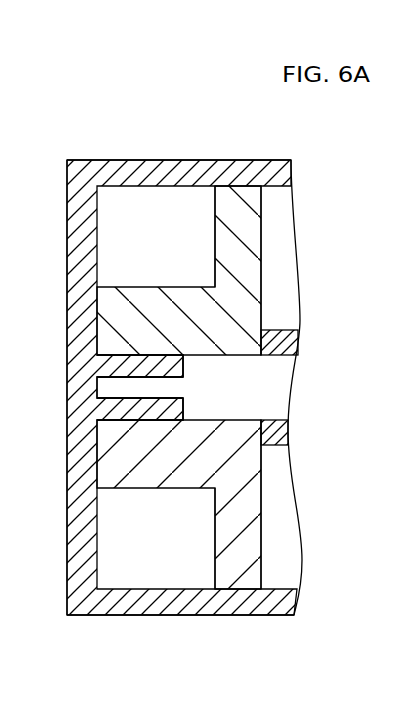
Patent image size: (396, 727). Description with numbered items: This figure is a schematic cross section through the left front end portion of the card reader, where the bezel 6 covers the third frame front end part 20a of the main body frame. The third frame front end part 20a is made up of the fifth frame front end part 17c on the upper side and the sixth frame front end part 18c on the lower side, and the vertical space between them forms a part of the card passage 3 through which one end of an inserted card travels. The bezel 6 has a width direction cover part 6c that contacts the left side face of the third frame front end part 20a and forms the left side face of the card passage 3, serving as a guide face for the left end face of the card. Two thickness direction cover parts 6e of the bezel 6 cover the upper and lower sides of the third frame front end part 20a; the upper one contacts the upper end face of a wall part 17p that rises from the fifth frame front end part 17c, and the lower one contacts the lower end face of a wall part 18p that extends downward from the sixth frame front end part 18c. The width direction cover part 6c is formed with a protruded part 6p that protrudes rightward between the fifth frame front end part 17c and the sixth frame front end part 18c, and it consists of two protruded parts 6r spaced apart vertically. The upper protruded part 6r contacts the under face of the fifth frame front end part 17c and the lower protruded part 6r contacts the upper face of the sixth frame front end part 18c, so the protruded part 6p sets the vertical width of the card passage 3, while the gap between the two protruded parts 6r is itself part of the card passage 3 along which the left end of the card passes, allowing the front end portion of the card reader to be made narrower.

The bezel 6 is at (97, 160).
The thickness direction cover part 6e is at (180, 160).
The width direction cover part 6c is at (67, 233).
The protruded part 6p is at (230, 364).
The protruded part 6r is at (183, 366).
The card passage 3 is at (95, 389).
The fifth frame front end part 17c is at (156, 287).
The wall part 17p is at (215, 227).
The sixth frame front end part 18c is at (130, 488).
The wall part 18p is at (215, 548).
The third frame front end part 20a is at (236, 186).